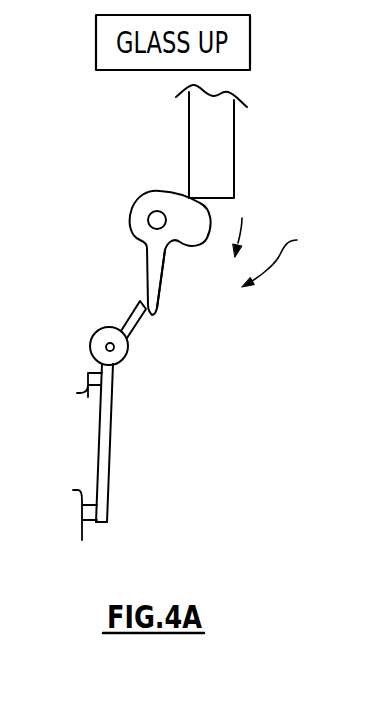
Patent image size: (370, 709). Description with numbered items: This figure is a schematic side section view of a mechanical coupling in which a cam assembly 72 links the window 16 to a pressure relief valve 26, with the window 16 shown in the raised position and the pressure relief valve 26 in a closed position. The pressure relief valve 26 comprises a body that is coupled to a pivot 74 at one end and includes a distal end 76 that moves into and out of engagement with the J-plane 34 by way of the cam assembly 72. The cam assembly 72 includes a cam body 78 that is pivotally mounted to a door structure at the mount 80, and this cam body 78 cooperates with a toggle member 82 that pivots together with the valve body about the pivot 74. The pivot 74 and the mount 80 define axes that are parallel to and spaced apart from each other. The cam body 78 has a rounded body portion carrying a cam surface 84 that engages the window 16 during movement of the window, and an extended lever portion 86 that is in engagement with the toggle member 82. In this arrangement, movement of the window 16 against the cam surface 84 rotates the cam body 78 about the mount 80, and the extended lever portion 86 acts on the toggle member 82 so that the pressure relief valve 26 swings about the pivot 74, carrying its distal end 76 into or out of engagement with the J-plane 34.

The window 16 is at (234, 145).
The pressure relief valve 26 is at (112, 470).
The J-plane 34 is at (82, 527).
The cam assembly 72 is at (284, 259).
The pivot 74 is at (105, 347).
The distal end 76 is at (108, 522).
The cam body 78 is at (147, 203).
The pivot mount 80 is at (148, 220).
The toggle member 82 is at (128, 318).
The cam surface 84 is at (209, 217).
The extended lever portion 86 is at (158, 296).